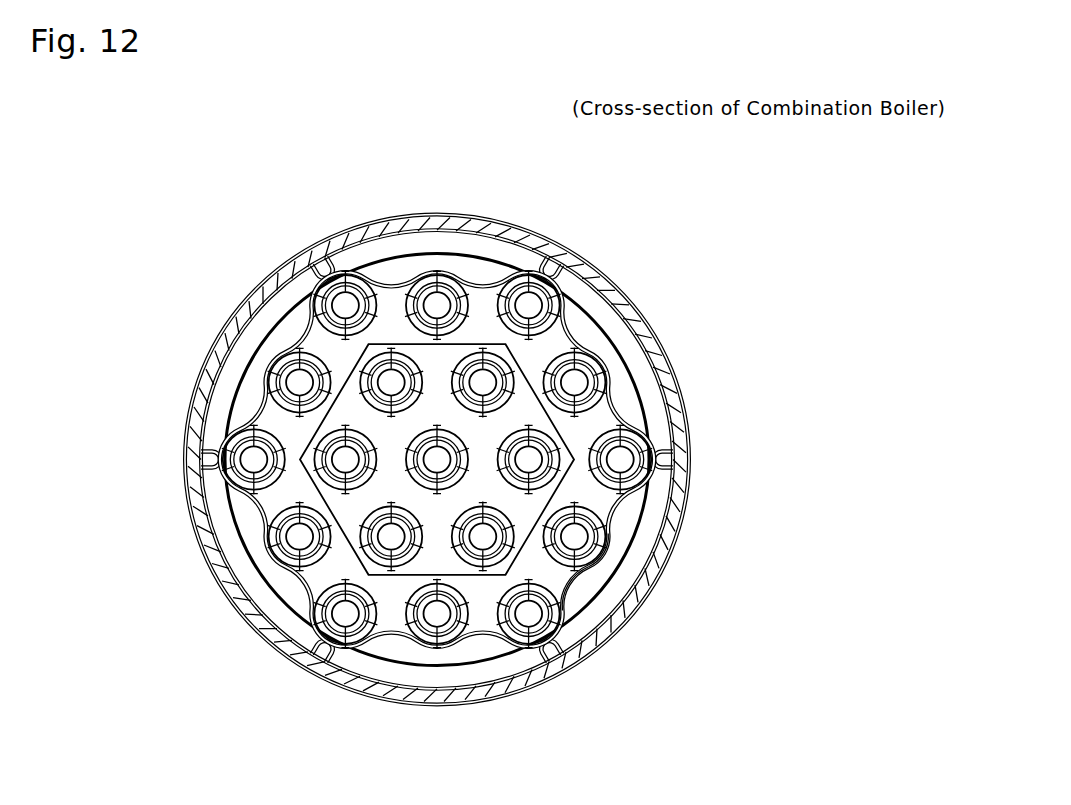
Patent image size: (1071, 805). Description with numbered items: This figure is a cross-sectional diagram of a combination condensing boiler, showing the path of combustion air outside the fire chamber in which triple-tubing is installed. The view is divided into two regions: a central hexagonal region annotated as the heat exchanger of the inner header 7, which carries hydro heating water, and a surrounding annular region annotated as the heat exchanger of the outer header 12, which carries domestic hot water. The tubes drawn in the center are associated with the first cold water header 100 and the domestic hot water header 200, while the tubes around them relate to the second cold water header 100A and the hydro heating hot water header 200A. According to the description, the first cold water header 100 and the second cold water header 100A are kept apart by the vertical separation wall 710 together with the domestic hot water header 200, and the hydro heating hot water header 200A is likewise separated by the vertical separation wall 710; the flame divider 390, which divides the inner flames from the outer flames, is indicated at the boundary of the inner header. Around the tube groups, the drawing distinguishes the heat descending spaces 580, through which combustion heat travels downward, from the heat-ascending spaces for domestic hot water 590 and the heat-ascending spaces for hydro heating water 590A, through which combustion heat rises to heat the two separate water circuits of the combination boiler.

The heat exchanger of inner header (HHW) 7 is at (480, 364).
The heat exchanger of outer header (DHW) 12 is at (507, 518).
The first cold water header 100 is at (600, 502).
The domestic hot water header 200 is at (525, 524).
The second cold water header 100A is at (597, 568).
The hydro heating hot water header 200A is at (575, 592).
The flame divider 390 is at (579, 417).
The vertical separation wall 710 is at (557, 432).
The heat descending spaces 580 is at (385, 275).
The heat-ascending spaces for domestic hot water 590 is at (323, 343).
The heat-ascending spaces for hydro heating water 590A is at (353, 412).